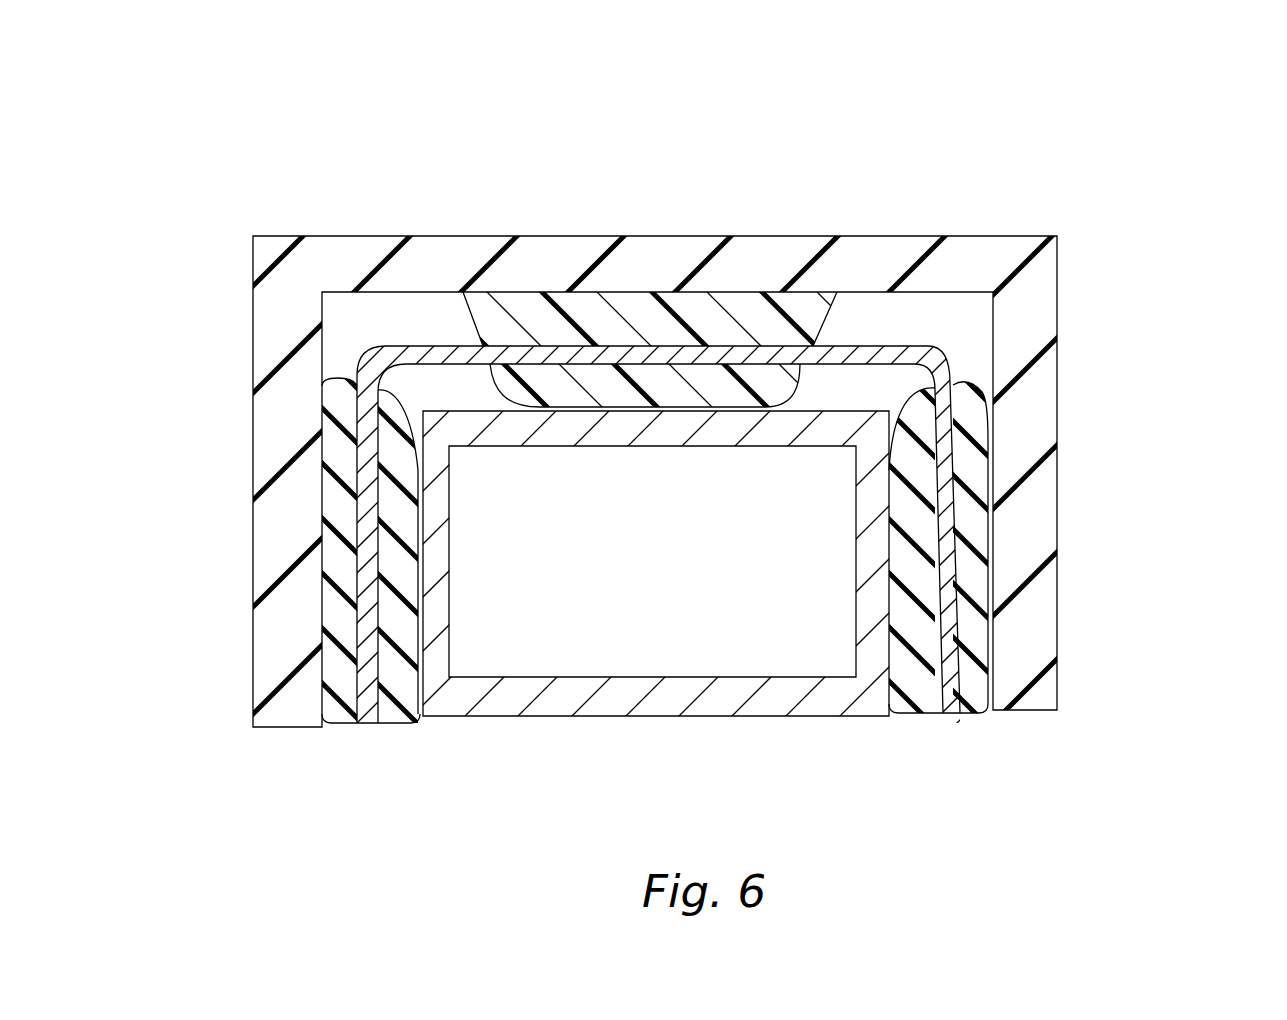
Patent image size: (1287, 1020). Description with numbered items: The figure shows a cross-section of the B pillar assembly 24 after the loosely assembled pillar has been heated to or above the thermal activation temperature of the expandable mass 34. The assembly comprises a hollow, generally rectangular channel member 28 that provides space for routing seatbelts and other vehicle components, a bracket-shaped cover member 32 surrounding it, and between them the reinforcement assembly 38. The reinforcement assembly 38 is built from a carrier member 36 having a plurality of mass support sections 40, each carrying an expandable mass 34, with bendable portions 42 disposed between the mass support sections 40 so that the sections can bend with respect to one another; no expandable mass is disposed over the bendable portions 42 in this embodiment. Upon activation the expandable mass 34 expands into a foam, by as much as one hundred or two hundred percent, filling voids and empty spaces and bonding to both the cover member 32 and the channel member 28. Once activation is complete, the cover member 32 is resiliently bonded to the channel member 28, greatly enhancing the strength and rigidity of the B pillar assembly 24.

The B pillar assembly 24 is at (180, 625).
The channel member 28 is at (613, 688).
The cover member 32 is at (830, 247).
The expandable mass 34 is at (510, 302).
The carrier member 36 is at (950, 693).
The reinforcement assembly 38 is at (351, 727).
The mass support section 40 is at (672, 330).
The bendable portion 42 is at (427, 355).